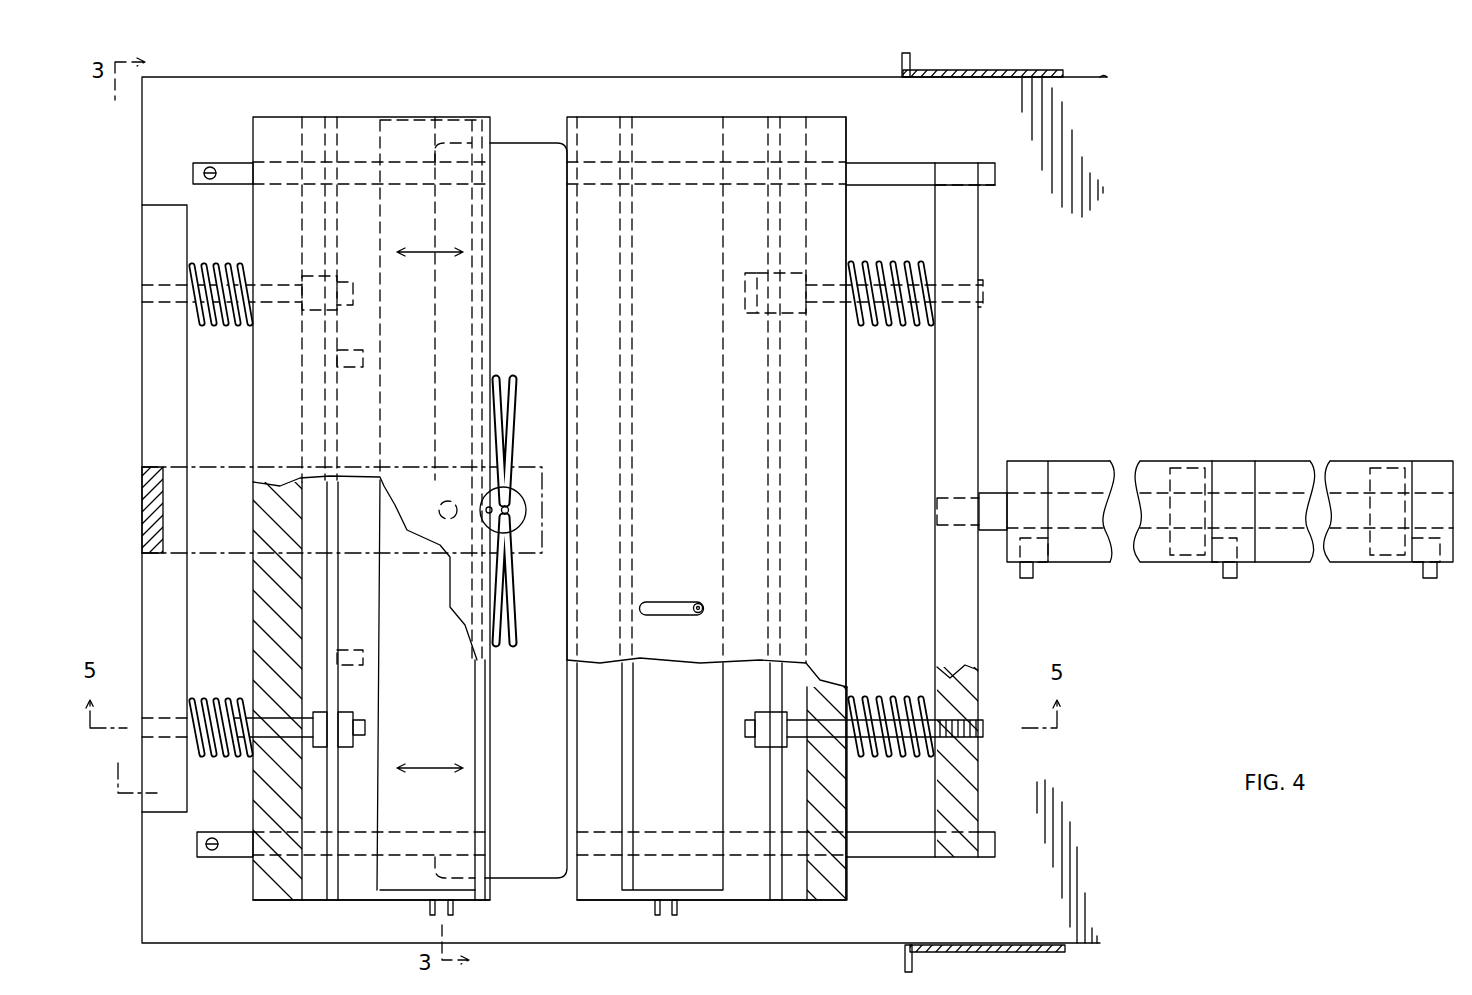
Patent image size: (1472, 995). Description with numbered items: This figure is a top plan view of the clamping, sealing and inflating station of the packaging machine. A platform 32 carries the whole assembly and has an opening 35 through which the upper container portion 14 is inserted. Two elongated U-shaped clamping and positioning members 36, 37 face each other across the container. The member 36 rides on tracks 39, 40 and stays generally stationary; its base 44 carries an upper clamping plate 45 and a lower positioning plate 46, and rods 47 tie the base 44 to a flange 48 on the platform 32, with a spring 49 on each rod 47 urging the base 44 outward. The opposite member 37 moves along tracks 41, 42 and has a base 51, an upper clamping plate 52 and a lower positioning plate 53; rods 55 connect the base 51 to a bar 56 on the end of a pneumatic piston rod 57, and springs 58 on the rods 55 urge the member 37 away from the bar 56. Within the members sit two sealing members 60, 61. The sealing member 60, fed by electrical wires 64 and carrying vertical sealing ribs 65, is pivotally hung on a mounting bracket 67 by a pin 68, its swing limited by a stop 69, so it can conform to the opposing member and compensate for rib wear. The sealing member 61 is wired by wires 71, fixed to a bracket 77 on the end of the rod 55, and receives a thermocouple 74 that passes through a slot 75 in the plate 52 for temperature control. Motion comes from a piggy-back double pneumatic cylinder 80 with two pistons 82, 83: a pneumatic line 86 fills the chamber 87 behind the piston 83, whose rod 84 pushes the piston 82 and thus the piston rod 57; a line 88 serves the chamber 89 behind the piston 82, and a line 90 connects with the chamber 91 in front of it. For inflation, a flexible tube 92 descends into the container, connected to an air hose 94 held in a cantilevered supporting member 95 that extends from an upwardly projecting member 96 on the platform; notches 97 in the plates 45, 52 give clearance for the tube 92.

The upper container portion 14 is at (510, 380).
The platform 32 is at (547, 933).
The opening 35 is at (530, 143).
The clamping and positioning member 36 is at (339, 109).
The clamping and positioning member 37 is at (677, 110).
The track 39 is at (230, 857).
The track 40 is at (232, 184).
The track 41 is at (885, 857).
The track 42 is at (885, 165).
The base 44 is at (253, 130).
The upper clamping plate 45 is at (360, 125).
The lower positioning plate 46 is at (365, 900).
The rod 47 is at (253, 290).
The flange 48 is at (165, 603).
The spring 49 is at (215, 318).
The base 51 is at (846, 140).
The upper clamping plate 52 is at (577, 238).
The lower positioning plate 53 is at (600, 900).
The rod 55 is at (887, 320).
The bar 56 is at (965, 385).
The pneumatic piston rod 57 is at (990, 500).
The spring 58 is at (880, 310).
The sealing member 60 is at (420, 125).
The sealing member 61 is at (705, 820).
The electrical wires 64 is at (450, 905).
The sealing ribs 65 is at (478, 742).
The mounting bracket 67 is at (333, 775).
The pin 68 is at (448, 500).
The stop 69 is at (365, 612).
The wires 71 is at (670, 905).
The thermocouple 74 is at (698, 613).
The slot 75 is at (665, 602).
The bracket 77 is at (770, 117).
The double pneumatic cylinder 80 is at (1250, 444).
The piston 82 is at (1185, 468).
The piston 83 is at (1387, 468).
The rod 84 is at (1283, 495).
The pneumatic line 86 is at (1425, 572).
The chamber 87 is at (1410, 475).
The line 88 is at (1235, 573).
The chamber 89 is at (1212, 548).
The line 90 is at (1032, 570).
The chamber 91 is at (1075, 550).
The tube 92 is at (520, 557).
The air hose 94 is at (512, 425).
The cantilevered supporting member 95 is at (232, 467).
The upwardly projecting member 96 is at (152, 497).
The notch 97 is at (570, 510).